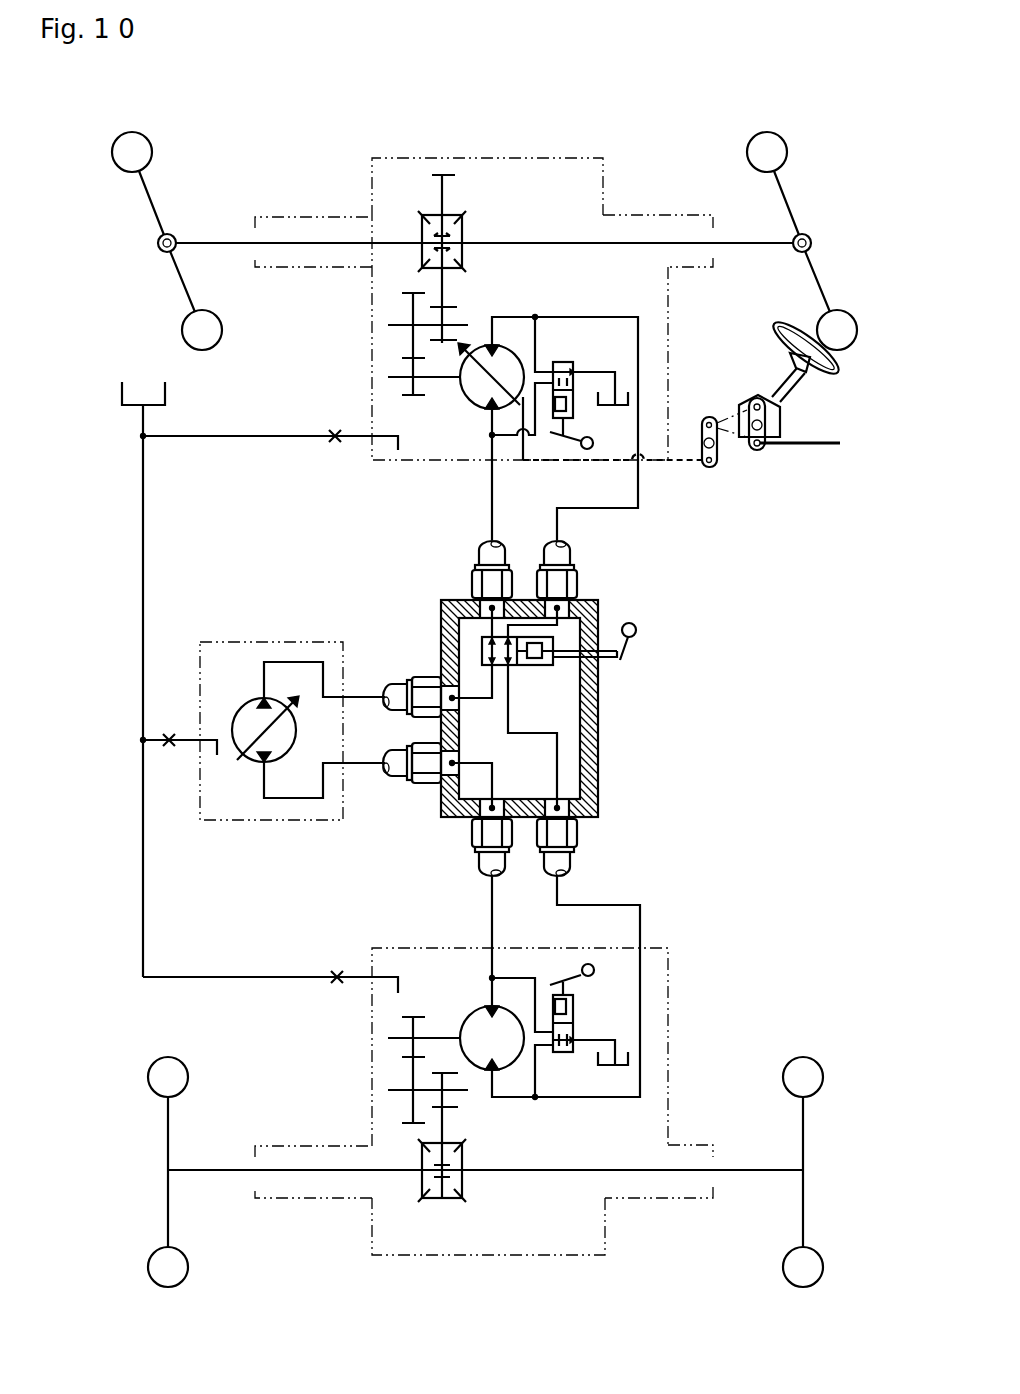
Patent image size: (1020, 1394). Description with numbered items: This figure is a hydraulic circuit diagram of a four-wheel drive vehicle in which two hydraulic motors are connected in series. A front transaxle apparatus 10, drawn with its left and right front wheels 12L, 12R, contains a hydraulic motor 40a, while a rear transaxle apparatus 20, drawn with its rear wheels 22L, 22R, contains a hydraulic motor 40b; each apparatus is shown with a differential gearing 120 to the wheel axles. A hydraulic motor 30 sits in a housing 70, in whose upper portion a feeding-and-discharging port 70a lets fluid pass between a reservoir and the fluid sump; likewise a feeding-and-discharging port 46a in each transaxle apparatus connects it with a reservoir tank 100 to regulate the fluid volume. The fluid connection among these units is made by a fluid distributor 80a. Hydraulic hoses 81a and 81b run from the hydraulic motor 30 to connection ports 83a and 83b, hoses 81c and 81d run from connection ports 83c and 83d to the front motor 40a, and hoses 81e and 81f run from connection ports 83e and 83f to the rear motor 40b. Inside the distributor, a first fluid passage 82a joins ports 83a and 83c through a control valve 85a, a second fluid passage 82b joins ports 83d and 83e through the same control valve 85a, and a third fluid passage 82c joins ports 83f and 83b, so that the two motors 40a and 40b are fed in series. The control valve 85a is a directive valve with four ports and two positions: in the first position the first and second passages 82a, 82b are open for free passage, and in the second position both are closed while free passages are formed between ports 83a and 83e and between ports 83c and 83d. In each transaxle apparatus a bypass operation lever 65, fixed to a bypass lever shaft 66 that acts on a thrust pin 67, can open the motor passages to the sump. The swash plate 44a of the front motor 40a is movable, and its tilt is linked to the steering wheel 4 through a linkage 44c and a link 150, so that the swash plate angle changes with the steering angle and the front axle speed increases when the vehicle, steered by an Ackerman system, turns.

The steering wheel 4 is at (785, 328).
The front transaxle apparatus 10 is at (668, 288).
The left front wheel 12L is at (198, 248).
The right front wheel 12R is at (737, 248).
The rear transaxle apparatus 20 is at (671, 1030).
The left rear wheel 22L is at (202, 1174).
The right rear wheel 22R is at (737, 1174).
The hydraulic motor 30 is at (294, 752).
The hydraulic motor 40a is at (468, 408).
The hydraulic motor 40b is at (475, 1001).
The swash plate 44a is at (462, 350).
The motor displacement control link 44c is at (515, 461).
The feeding-and-discharging port 46a is at (335, 448).
The bypass operation lever 65 is at (593, 443).
The bypass lever shaft 66 is at (567, 430).
The thrust pin 67 is at (573, 358).
The housing 70 is at (240, 823).
The feeding-and-discharging port 70a is at (170, 751).
The fluid distributor 80a is at (610, 746).
The hydraulic hose 81a is at (386, 684).
The hydraulic hose 81b is at (388, 776).
The hydraulic hose 81c is at (479, 542).
The hydraulic hose 81d is at (568, 542).
The hydraulic hose 81e is at (568, 864).
The hydraulic hose 81f is at (480, 864).
The first fluid passage 82a is at (464, 700).
The second fluid passage 82b is at (509, 736).
The third fluid passage 82c is at (485, 782).
The connection port 83a is at (417, 684).
The connection port 83b is at (415, 786).
The connection port 83c is at (483, 580).
The connection port 83d is at (566, 580).
The connection port 83e is at (566, 824).
The connection port 83f is at (486, 824).
The control valve 85a is at (550, 676).
The reservoir tank 100 is at (168, 389).
The differential gear unit 120 is at (390, 195).
The steering link 150 is at (742, 457).